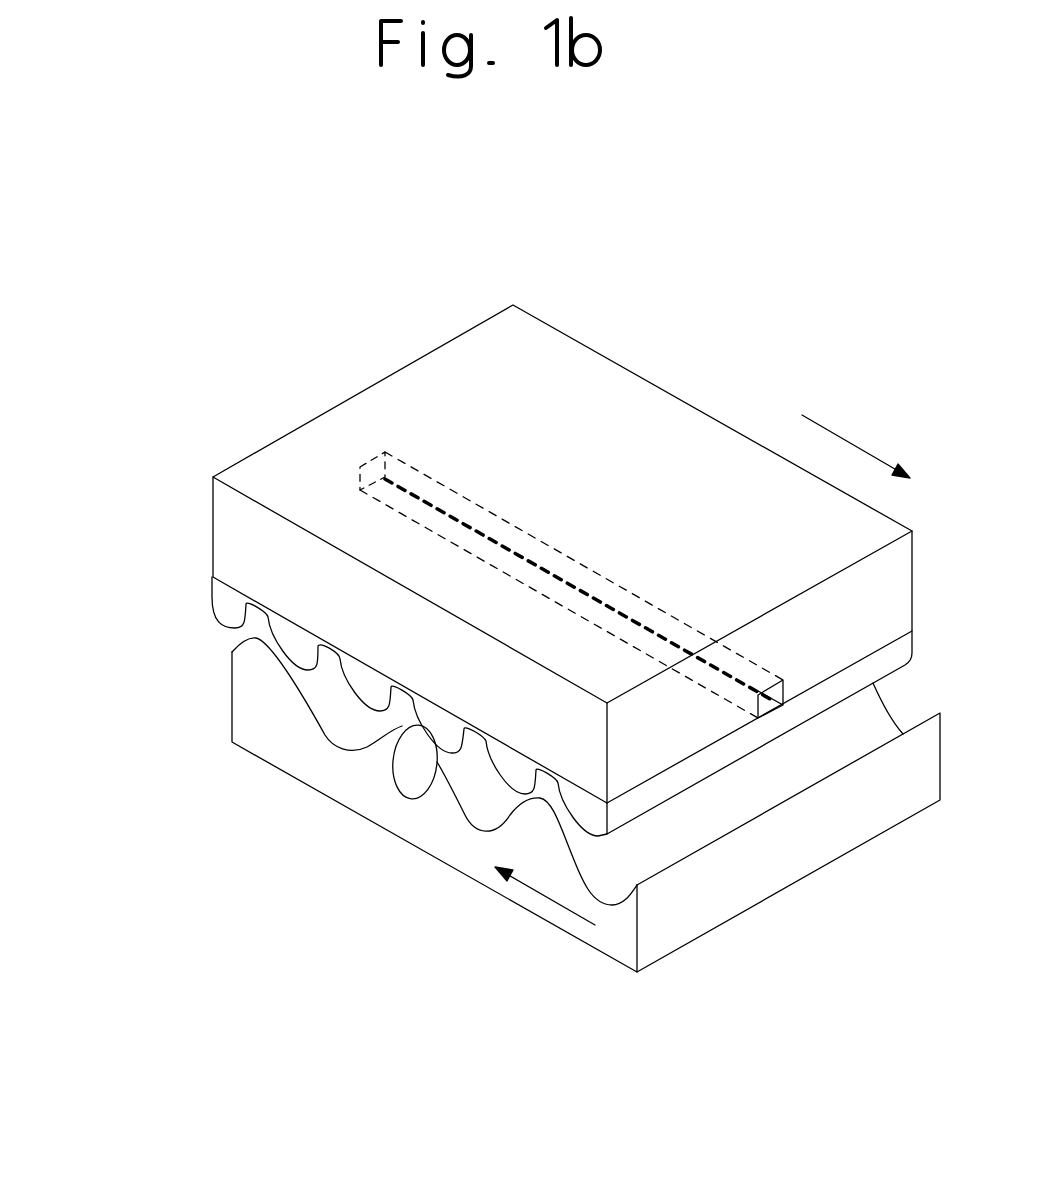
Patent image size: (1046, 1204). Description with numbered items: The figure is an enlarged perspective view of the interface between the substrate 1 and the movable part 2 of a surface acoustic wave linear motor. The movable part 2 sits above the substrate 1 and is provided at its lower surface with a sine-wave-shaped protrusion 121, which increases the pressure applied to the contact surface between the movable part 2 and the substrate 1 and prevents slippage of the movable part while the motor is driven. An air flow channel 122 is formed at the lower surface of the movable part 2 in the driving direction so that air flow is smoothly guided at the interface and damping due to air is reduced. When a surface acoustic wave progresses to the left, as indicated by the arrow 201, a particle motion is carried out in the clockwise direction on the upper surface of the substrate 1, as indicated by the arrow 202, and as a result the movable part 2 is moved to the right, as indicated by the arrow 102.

The substrate 1 is at (273, 742).
The movable part 2 is at (625, 403).
The arrow 102 is at (850, 443).
The protrusion 121 is at (232, 609).
The air flow channel 122 is at (373, 462).
The arrow 201 is at (547, 900).
The arrow 202 is at (417, 797).